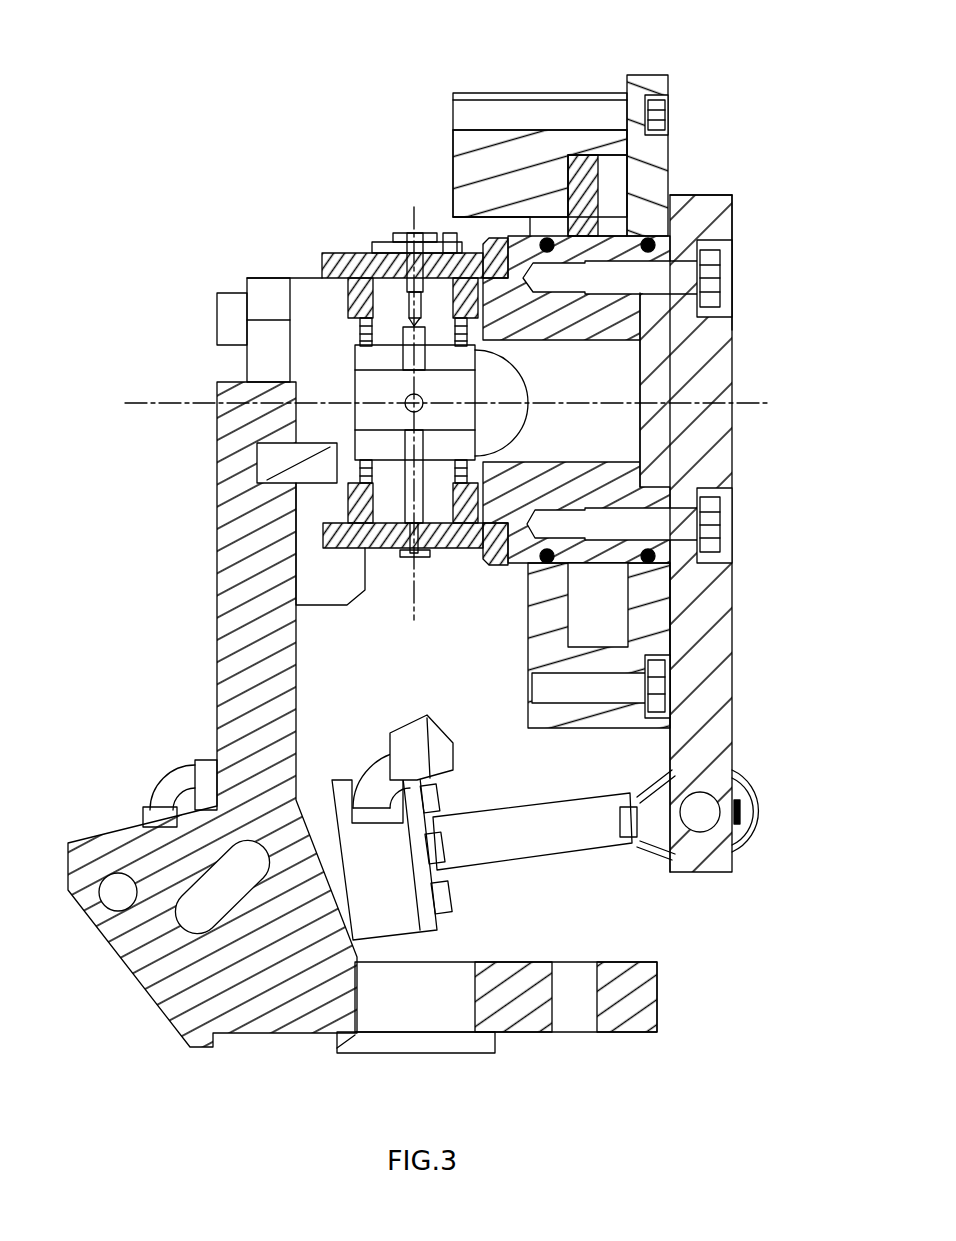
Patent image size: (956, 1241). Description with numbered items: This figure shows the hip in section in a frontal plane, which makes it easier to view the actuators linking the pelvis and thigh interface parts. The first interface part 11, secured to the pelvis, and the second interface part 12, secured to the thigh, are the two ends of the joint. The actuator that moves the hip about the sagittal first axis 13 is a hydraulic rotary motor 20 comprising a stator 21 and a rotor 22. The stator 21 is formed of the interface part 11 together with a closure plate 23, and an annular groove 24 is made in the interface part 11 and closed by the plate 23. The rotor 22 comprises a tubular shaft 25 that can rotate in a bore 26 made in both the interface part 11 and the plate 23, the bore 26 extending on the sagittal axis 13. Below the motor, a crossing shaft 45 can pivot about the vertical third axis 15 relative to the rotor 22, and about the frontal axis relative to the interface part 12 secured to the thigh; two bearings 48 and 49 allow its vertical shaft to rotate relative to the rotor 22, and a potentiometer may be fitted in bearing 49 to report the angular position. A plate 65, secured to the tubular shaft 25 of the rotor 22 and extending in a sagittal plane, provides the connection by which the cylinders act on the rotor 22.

The first interface part 11 is at (457, 170).
The second interface part 12 is at (640, 990).
The first axis 13 is at (172, 400).
The third axis 15 is at (416, 588).
The hydraulic rotary motor 20 is at (738, 275).
The stator 21 is at (375, 180).
The rotor 22 is at (645, 330).
The closure plate 23 is at (658, 157).
The annular groove 24 is at (597, 180).
The tubular shaft 25 is at (510, 330).
The bore 26 is at (547, 238).
The crossing shaft 45 is at (447, 417).
The bearing 48 is at (352, 543).
The bearing 49 is at (332, 265).
The plate 65 is at (705, 610).